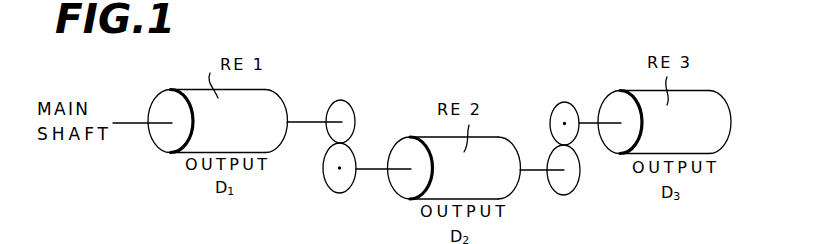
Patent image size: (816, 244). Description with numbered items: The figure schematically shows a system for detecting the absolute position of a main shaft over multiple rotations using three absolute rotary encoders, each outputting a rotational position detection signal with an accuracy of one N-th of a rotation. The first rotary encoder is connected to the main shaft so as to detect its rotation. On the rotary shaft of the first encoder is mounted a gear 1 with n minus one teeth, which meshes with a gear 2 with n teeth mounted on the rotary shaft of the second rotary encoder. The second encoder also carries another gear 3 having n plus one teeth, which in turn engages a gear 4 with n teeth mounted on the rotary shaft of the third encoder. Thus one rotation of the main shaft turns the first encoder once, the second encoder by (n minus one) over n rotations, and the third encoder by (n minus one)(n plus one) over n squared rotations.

The gear with n−1 teeth 1 is at (355, 112).
The gear with n teeth 2 is at (324, 167).
The gear with n+1 teeth 3 is at (573, 173).
The gear with n teeth 4 is at (550, 123).